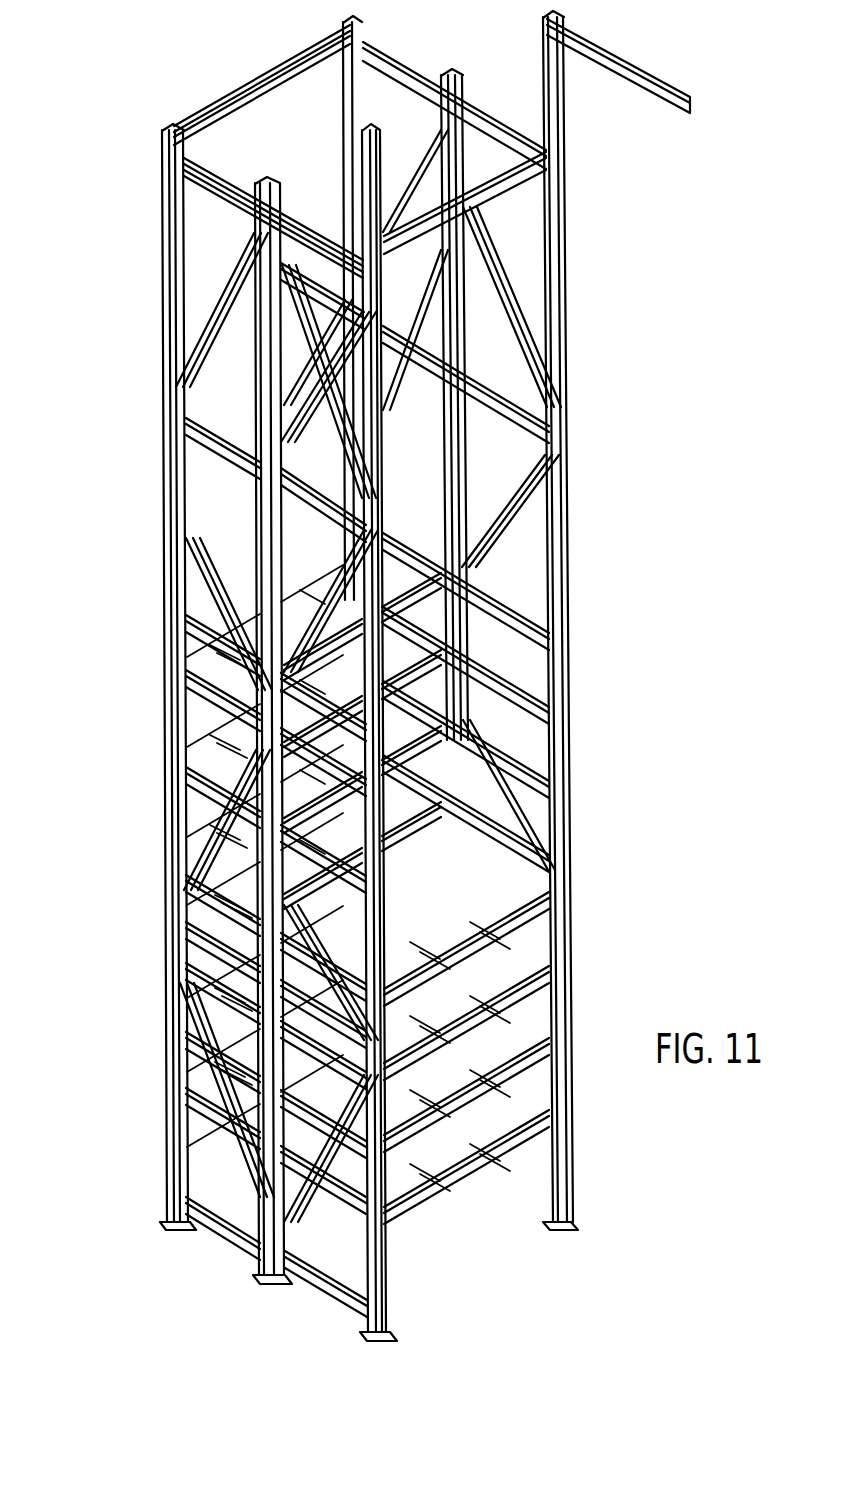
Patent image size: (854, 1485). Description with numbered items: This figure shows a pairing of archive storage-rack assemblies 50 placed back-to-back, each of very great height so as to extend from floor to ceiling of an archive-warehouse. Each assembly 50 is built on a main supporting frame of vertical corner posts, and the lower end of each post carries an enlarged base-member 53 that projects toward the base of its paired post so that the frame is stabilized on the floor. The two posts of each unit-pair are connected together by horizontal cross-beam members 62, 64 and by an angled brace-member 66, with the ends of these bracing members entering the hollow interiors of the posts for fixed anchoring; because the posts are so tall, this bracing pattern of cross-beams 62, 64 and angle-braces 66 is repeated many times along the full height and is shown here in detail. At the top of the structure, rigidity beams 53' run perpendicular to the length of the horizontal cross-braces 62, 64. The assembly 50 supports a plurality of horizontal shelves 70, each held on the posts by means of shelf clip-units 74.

The archive storage-rack assembly 50 is at (160, 525).
The enlarged base-member 53 is at (471, 698).
The rigidity beam 53' is at (262, 81).
The horizontal cross-beam member 62 is at (207, 195).
The horizontal cross-beam member 64 is at (393, 57).
The angled brace-member 66 is at (228, 280).
The horizontal shelf 70 is at (445, 919).
The shelf clip-unit 74 is at (505, 604).